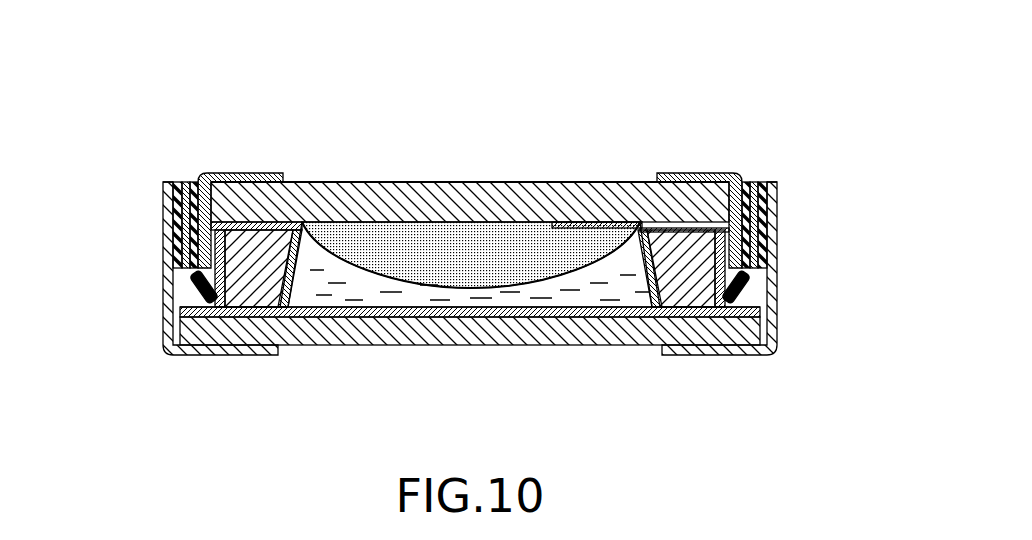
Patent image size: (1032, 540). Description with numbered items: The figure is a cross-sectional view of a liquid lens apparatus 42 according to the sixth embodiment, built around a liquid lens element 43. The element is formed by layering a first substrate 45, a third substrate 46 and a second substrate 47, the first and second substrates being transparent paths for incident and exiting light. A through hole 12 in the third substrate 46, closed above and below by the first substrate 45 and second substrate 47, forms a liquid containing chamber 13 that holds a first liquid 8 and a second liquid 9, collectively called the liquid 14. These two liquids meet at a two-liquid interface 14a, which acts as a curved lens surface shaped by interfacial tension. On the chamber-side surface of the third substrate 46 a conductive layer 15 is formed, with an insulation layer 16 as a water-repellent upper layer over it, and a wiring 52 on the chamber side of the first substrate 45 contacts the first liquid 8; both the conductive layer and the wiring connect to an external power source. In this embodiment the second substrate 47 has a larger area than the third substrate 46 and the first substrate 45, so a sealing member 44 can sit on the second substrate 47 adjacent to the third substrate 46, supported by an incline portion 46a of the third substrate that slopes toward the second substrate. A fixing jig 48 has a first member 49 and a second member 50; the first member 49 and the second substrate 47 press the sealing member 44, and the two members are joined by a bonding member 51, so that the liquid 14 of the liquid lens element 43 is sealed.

The liquid lens apparatus 42 is at (830, 90).
The liquid lens element 43 is at (612, 149).
The sealing member 44 is at (165, 330).
The first substrate 45 is at (448, 182).
The third substrate 46 is at (255, 262).
The incline portion 46a is at (217, 292).
The second substrate 47 is at (457, 322).
The fixing jig 48 is at (473, 237).
The first member 49 is at (165, 192).
The second member 50 is at (74, 170).
The bonding member 51 is at (165, 234).
The wiring 52 is at (557, 222).
The first liquid 8 is at (362, 245).
The second liquid 9 is at (333, 278).
The through hole 12 is at (289, 292).
The liquid containing chamber 13 is at (513, 292).
The liquid 14 is at (475, 228).
The two-liquid interface 14a is at (563, 280).
The conductive layer 15 is at (323, 316).
The insulation layer 16 is at (398, 290).